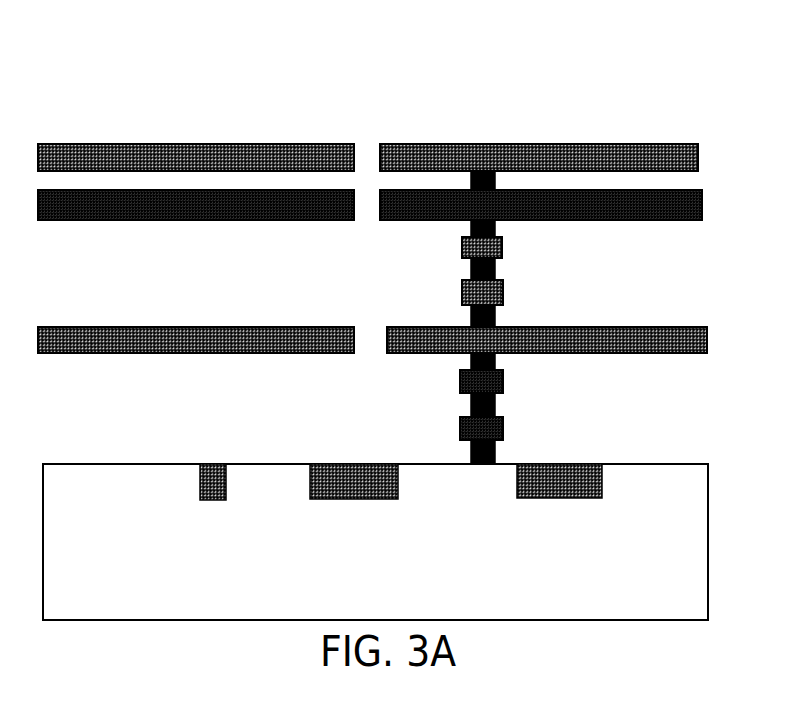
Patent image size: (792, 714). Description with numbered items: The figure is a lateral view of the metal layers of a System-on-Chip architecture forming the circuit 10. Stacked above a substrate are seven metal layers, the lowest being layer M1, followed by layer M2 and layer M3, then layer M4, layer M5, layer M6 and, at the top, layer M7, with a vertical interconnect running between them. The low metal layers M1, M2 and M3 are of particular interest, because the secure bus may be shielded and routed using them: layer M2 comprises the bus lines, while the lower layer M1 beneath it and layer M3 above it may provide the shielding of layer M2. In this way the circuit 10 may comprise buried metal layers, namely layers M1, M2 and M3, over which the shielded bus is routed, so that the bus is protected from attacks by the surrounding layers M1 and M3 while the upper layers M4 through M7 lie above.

The circuit 10 is at (718, 95).
The layer M1 is at (527, 413).
The layer M2 is at (527, 365).
The layer M3 is at (660, 340).
The layer M4 is at (523, 276).
The layer M5 is at (523, 237).
The layer M6 is at (655, 207).
The layer M7 is at (655, 158).